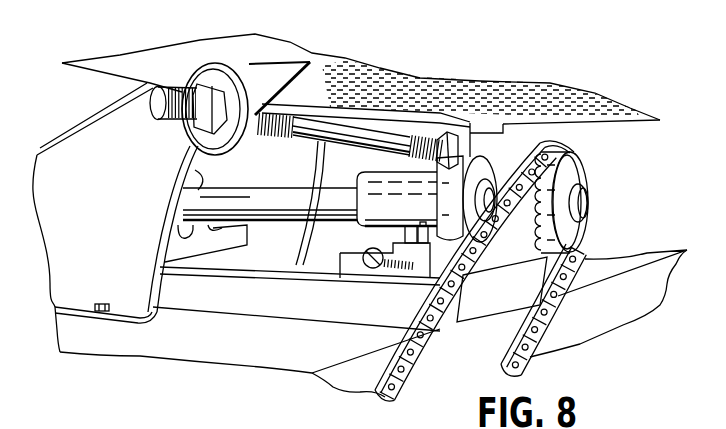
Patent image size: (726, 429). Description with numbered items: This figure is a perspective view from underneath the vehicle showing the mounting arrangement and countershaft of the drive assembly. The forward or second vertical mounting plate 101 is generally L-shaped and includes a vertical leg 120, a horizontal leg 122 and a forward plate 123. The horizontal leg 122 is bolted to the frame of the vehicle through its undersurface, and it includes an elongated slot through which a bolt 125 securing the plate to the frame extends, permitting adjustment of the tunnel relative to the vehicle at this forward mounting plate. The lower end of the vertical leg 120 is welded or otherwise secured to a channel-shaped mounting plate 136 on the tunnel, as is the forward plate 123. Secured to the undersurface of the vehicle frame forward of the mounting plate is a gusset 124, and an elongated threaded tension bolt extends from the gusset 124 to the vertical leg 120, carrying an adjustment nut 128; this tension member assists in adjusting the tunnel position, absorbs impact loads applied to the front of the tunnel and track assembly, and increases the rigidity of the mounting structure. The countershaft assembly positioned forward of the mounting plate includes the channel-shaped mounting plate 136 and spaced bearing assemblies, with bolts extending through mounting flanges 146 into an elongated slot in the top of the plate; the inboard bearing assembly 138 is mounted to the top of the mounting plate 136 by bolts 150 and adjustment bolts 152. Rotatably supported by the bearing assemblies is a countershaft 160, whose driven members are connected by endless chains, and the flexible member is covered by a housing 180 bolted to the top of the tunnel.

The second vertical mounting plate 101 is at (478, 114).
The vertical leg 120 is at (357, 188).
The horizontal leg 122 is at (530, 87).
The forward plate 123 is at (333, 175).
The gusset 124 is at (267, 75).
The bolt 125 is at (447, 117).
The adjustment nut 128 is at (213, 92).
The channel-shaped mounting plate 136 is at (223, 302).
The inboard bearing assembly 138 is at (480, 157).
The mounting flanges 146 is at (430, 277).
The bolts 150 is at (415, 236).
The adjustment bolts 152 is at (363, 252).
The countershaft 160 is at (190, 178).
The housing 180 is at (112, 125).